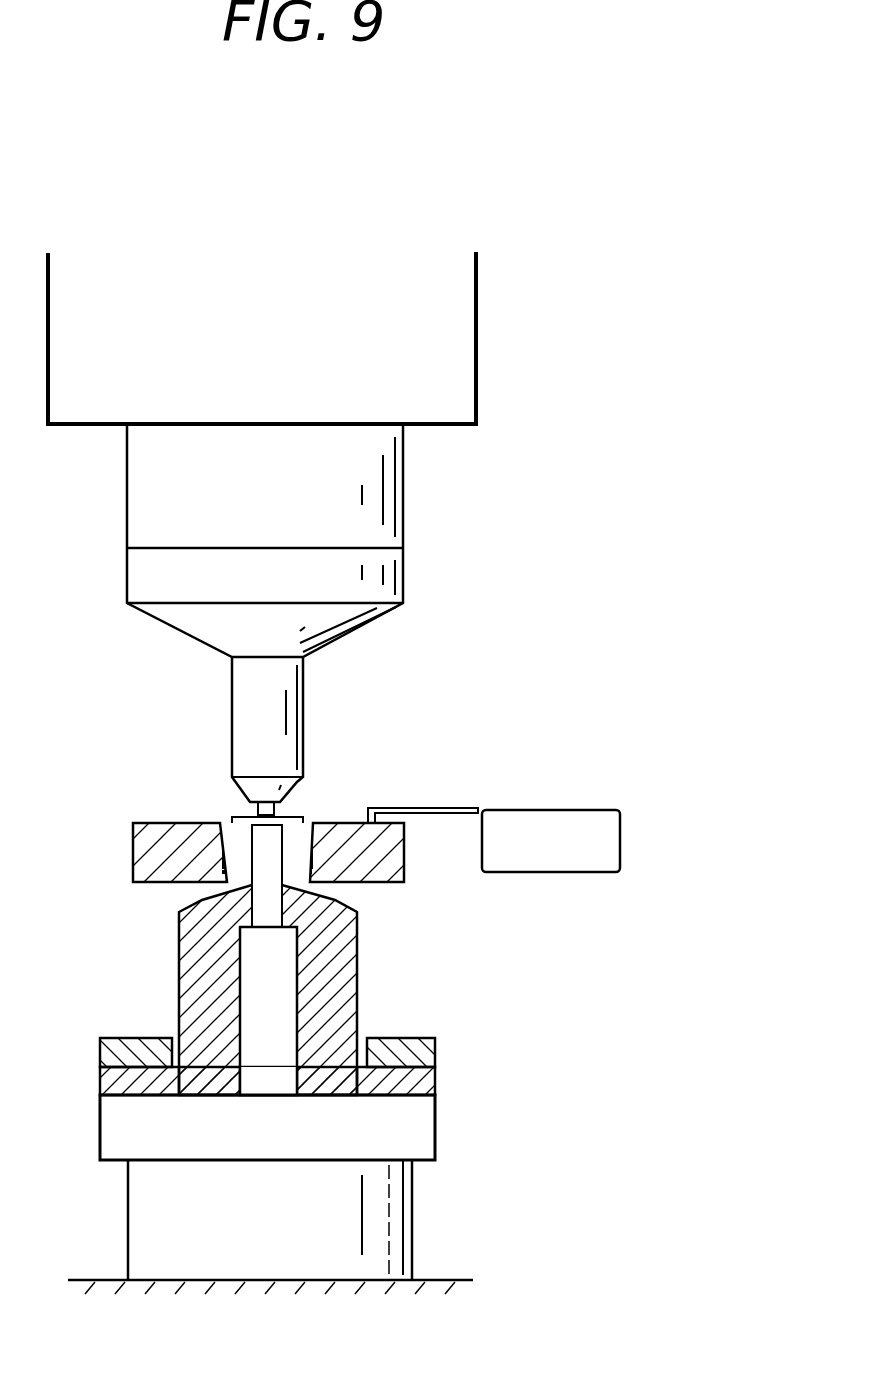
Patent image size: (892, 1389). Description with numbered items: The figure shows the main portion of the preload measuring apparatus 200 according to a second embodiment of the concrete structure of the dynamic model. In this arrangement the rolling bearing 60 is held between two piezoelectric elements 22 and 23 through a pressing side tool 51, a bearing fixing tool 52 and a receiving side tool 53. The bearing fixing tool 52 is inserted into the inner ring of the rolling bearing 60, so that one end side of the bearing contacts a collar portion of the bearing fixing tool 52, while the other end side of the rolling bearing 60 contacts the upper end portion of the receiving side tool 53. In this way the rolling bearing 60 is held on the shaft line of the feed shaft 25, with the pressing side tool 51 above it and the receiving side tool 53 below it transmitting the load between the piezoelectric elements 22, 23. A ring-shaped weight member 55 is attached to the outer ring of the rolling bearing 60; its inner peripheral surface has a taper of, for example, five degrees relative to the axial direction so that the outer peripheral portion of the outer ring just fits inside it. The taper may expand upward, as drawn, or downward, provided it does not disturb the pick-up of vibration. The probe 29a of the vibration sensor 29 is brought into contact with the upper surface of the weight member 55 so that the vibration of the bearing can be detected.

The preload measuring apparatus 200 is at (608, 290).
The feed shaft 25 is at (467, 322).
The piezoelectric element 23 is at (403, 500).
The pressing side tool 51 is at (232, 690).
The bearing fixing tool 52 is at (250, 813).
The rolling bearing 60 is at (222, 822).
The weight member 55 is at (147, 850).
The probe 29a is at (371, 808).
The vibration sensor 29 is at (596, 810).
The receiving side tool 53 is at (347, 968).
The piezoelectric element 22 is at (413, 1205).